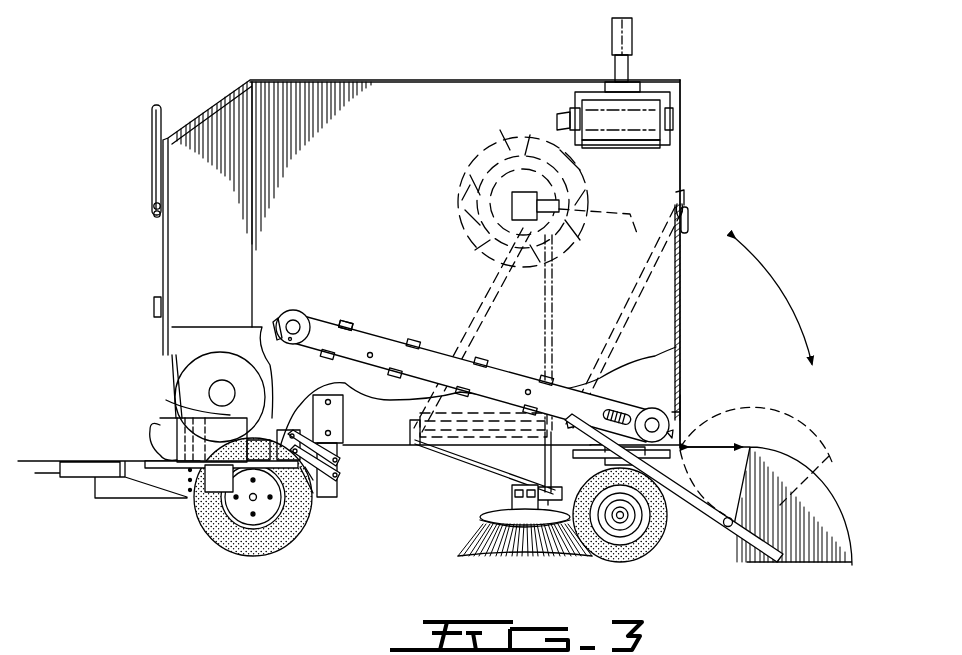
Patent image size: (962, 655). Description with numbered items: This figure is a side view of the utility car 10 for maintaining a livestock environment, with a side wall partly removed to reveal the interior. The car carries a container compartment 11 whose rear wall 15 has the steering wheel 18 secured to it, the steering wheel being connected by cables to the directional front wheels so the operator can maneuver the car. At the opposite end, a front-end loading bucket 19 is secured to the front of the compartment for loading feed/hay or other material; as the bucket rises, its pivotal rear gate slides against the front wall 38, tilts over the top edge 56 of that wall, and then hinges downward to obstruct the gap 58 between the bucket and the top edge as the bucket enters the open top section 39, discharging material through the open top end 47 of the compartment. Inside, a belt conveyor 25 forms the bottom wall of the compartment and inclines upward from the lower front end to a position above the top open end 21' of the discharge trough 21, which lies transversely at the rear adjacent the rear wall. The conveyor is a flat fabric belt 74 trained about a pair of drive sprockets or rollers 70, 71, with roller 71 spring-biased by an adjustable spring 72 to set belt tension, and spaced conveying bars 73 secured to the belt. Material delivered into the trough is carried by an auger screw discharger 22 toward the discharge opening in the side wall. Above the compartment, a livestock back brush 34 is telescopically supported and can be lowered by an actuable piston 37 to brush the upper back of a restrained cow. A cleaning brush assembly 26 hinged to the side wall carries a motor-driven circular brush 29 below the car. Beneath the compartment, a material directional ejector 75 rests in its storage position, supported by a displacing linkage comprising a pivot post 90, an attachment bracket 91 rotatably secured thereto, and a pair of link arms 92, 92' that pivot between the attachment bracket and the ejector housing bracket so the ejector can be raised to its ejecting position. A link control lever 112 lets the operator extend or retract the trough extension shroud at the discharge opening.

The utility car 10 is at (157, 68).
The container compartment 11 is at (356, 116).
The rear wall 15 is at (165, 285).
The steering wheel 18 is at (154, 150).
The front-end loading bucket 19 is at (848, 524).
The discharge trough 21 is at (222, 345).
The top open end of the discharge trough 21' is at (216, 276).
The auger screw discharger 22 is at (190, 382).
The belt conveyor 25 is at (386, 330).
The cleaning brush assembly 26 is at (458, 176).
The circular brush 29 is at (470, 550).
The livestock back brush 34 is at (598, 100).
The actuable piston 37 is at (634, 34).
The front wall 38 is at (684, 290).
The open top section 39 is at (683, 166).
The open top end 47 is at (654, 158).
The top edge of the front wall 56 is at (686, 208).
The gap 58 is at (672, 195).
The drive sprocket or roller 70 is at (296, 320).
The drive sprocket or roller 71 is at (668, 414).
The adjustable spring 72 is at (620, 410).
The conveying bars 73 is at (346, 318).
The flat fabric belt 74 is at (514, 372).
The material directional ejector 75 is at (172, 428).
The pivot post 90 is at (332, 488).
The attachment bracket 91 is at (340, 490).
The link arm 92 is at (359, 437).
The link arm 92' is at (317, 509).
The link control lever 112 is at (160, 232).